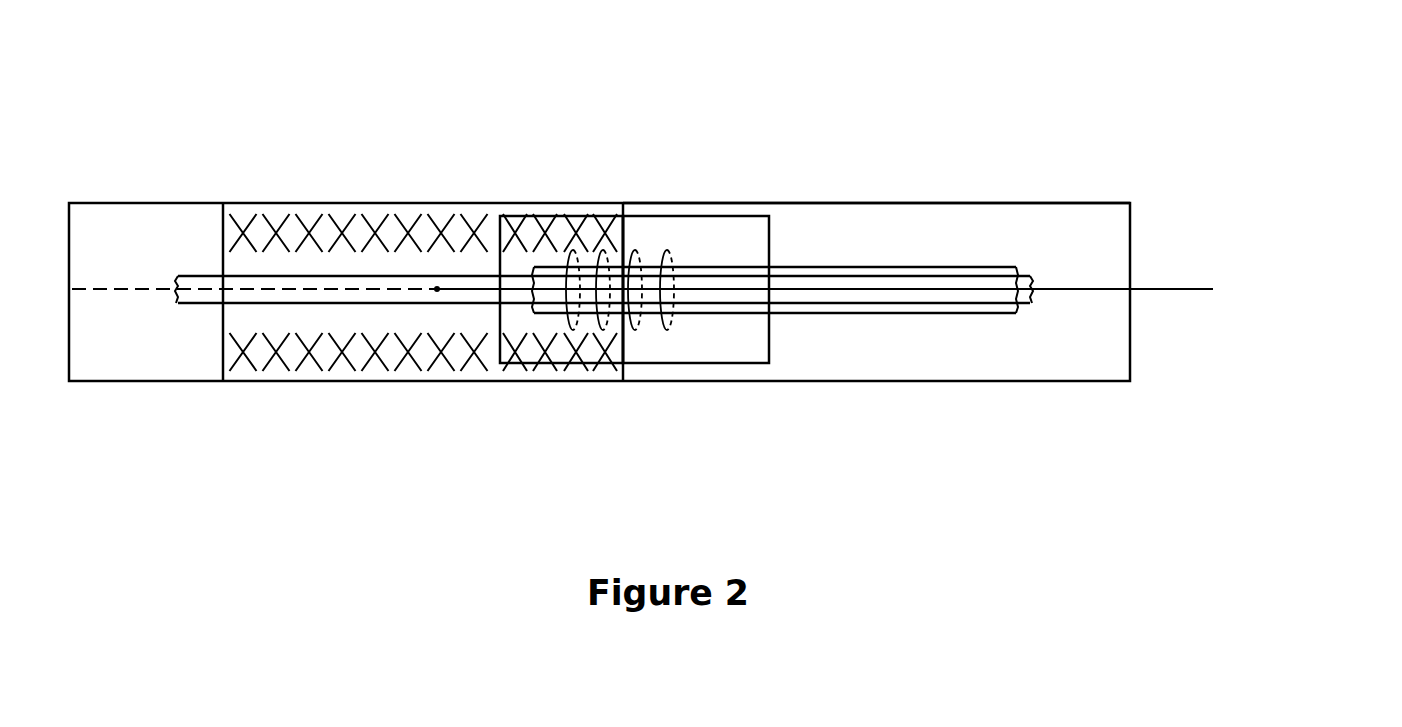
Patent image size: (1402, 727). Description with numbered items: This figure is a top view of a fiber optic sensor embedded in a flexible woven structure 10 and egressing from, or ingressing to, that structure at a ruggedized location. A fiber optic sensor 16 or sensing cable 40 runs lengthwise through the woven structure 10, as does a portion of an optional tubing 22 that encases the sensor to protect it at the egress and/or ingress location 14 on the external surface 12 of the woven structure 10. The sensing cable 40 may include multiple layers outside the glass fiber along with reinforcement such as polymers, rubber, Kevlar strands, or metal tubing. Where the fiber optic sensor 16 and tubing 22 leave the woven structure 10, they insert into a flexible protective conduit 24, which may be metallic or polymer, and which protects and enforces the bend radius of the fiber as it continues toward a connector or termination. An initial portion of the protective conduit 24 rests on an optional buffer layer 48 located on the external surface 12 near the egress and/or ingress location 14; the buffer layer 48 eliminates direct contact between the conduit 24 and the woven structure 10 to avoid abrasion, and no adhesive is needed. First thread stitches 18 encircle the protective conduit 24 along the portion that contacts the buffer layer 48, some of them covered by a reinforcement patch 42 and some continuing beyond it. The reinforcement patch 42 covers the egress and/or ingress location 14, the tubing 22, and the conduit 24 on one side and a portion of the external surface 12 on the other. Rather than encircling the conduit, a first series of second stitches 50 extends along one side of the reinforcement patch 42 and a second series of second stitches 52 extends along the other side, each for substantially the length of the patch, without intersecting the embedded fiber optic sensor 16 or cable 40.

The woven structure 10 is at (1102, 385).
The external surface 12 is at (1005, 203).
The egress and/or ingress location 14 is at (437, 289).
The fiber optic sensor 16 is at (138, 285).
The first thread stitches 18 is at (645, 250).
The tubing 22 is at (200, 310).
The flexible protective conduit 24 is at (868, 260).
The sensing cable 40 is at (1198, 280).
The reinforcement patch 42 is at (445, 200).
The buffer layer 48 is at (730, 352).
The first series of second stitches 50 is at (378, 210).
The second series of second stitches 52 is at (378, 367).